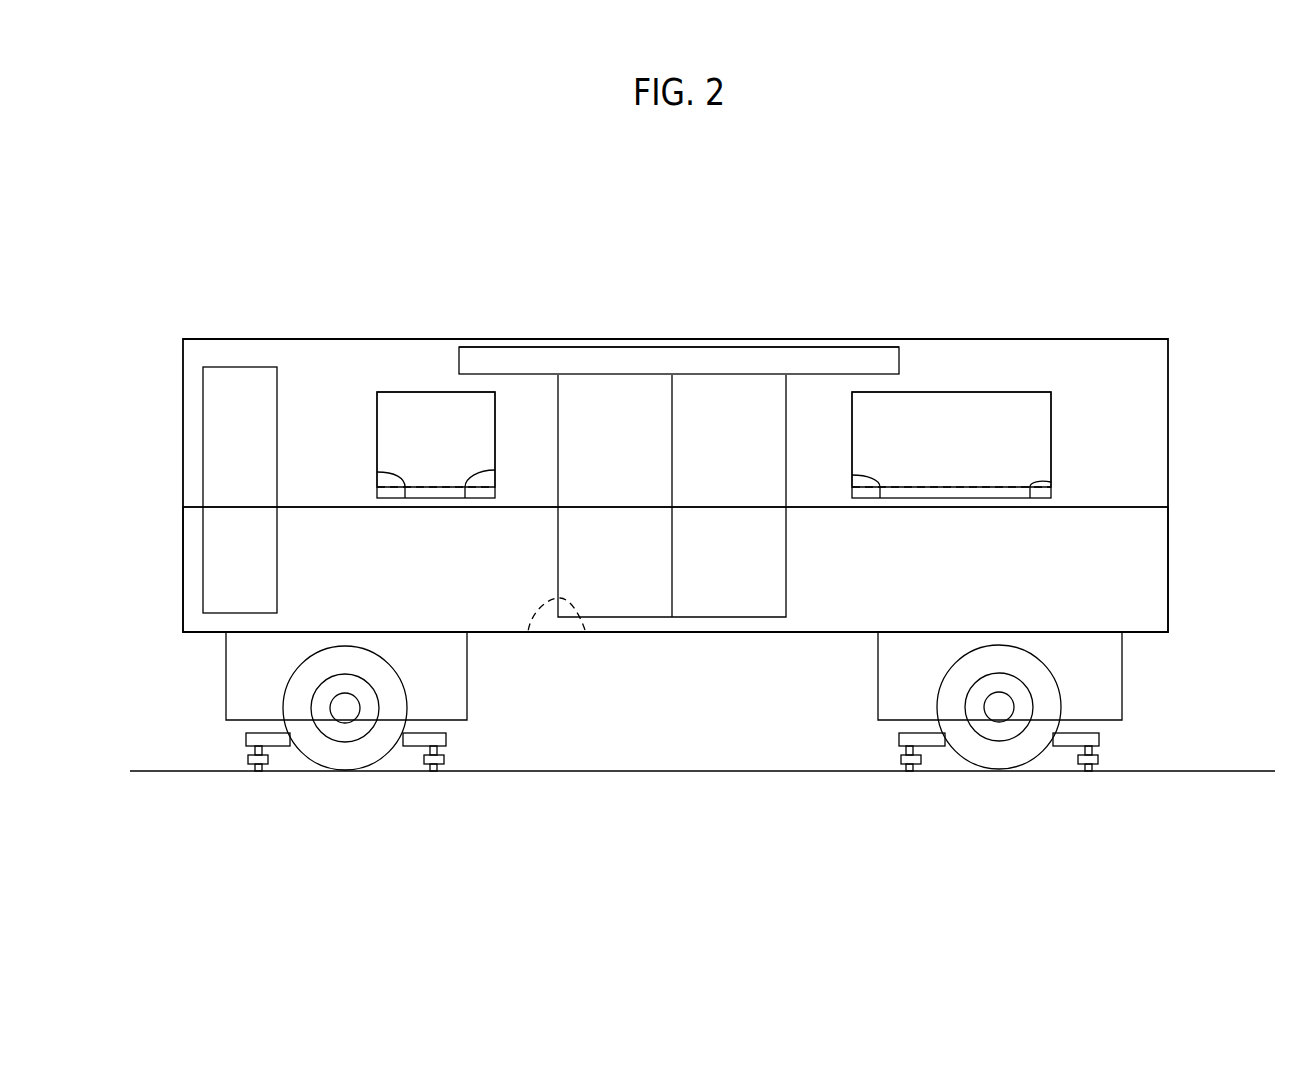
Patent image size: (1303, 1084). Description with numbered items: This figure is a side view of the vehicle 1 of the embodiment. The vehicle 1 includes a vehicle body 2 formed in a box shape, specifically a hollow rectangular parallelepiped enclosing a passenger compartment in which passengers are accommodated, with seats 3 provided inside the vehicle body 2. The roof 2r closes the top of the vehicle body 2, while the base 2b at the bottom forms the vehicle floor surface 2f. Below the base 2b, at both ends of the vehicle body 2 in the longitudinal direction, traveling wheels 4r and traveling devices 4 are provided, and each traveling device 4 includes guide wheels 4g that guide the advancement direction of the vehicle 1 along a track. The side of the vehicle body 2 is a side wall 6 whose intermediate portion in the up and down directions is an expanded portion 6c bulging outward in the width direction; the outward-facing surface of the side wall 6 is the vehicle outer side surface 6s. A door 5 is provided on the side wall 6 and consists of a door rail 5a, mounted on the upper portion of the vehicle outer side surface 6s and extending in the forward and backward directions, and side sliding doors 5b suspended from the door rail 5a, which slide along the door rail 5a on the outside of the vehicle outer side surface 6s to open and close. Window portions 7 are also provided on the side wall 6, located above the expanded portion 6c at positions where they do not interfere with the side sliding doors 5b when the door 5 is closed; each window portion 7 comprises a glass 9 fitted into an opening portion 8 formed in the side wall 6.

The vehicle 1 is at (1113, 326).
The vehicle body 2 is at (1155, 338).
The roof of vehicle body 2r is at (575, 339).
The vehicle floor surface 2f is at (585, 630).
The base 2b is at (847, 632).
The seats 3 is at (495, 470).
The traveling devices 4 is at (466, 690).
The traveling wheels 4r is at (385, 763).
The guide wheels 4g is at (258, 768).
The door 5 is at (686, 347).
The door rail 5a is at (828, 345).
The side sliding doors 5b is at (703, 617).
The side wall 6 is at (1150, 484).
The vehicle outer side surface 6s is at (1130, 528).
The expanded portion 6c is at (233, 505).
The window portions 7 is at (427, 392).
The opening portion 8 is at (377, 472).
The glass 9 is at (397, 428).